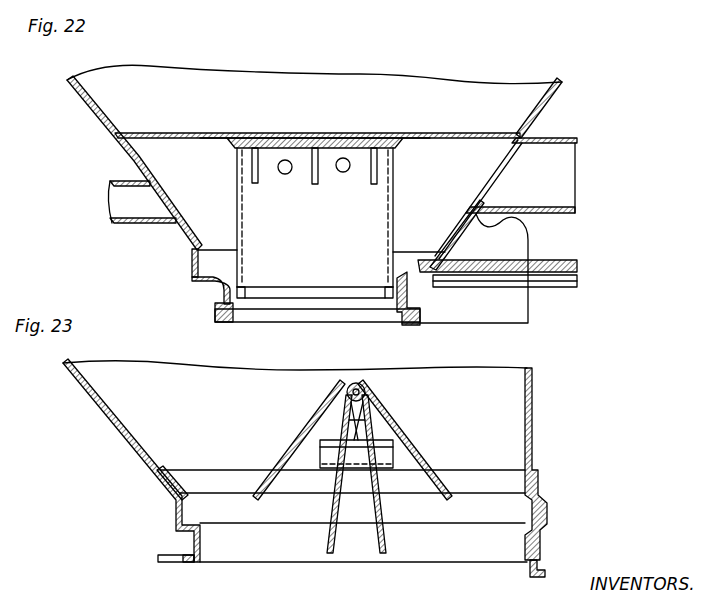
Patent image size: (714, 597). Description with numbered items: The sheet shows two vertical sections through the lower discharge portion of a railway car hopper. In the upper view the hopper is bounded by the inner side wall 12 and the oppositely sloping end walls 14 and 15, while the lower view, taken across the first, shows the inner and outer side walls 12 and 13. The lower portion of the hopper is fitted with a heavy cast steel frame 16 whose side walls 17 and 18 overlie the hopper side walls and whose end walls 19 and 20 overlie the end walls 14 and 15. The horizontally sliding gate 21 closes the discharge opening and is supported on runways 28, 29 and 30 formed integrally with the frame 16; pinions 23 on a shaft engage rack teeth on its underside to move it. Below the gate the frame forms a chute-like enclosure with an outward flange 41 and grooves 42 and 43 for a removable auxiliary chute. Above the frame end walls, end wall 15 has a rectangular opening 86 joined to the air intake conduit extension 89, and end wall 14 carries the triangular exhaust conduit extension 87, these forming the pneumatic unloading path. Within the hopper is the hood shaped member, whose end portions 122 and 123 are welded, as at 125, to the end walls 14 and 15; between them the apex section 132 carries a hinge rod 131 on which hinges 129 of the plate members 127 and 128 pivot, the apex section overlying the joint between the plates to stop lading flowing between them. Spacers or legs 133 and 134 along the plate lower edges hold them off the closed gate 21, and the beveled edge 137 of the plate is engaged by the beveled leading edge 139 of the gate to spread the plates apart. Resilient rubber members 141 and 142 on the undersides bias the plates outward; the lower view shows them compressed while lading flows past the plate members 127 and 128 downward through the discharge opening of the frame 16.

In FIG. 22, the inner side wall 12 is at (454, 88).
In FIG. 23, the inner side wall 12 is at (533, 421).
In FIG. 23, the outer side wall 13 is at (118, 428).
In FIG. 22, the end wall 14 is at (561, 98).
In FIG. 22, the end wall 15 is at (86, 113).
In FIG. 23, the end wall 15 is at (507, 382).
In FIG. 22, the frame 16 is at (157, 271).
In FIG. 23, the frame 16 is at (133, 515).
In FIG. 23, the side wall of frame 17 is at (540, 483).
In FIG. 23, the side wall of frame 18 is at (152, 478).
In FIG. 22, the end wall of frame 19 is at (455, 223).
In FIG. 22, the end wall of frame 20 is at (193, 240).
In FIG. 23, the end wall of frame 20 is at (488, 480).
In FIG. 22, the horizontally sliding gate 21 is at (560, 260).
In FIG. 22, the pinions 23 is at (322, 45).
In FIG. 22, the support or runway 28 is at (207, 280).
In FIG. 23, the support or runway 29 is at (180, 532).
In FIG. 23, the support or runway 30 is at (547, 513).
In FIG. 23, the horizontal flange 41 is at (163, 563).
In FIG. 22, the groove 42 is at (417, 327).
In FIG. 22, the groove 43 is at (237, 320).
In FIG. 23, the groove 43 is at (530, 567).
In FIG. 22, the rectangular opening 86 is at (158, 217).
In FIG. 23, the rectangular opening 86 is at (387, 452).
In FIG. 22, the conduit extension 87 is at (590, 143).
In FIG. 22, the conduit extension 89 is at (93, 192).
In FIG. 22, the end portion 122 is at (472, 152).
In FIG. 22, the end portion 123 is at (158, 150).
In FIG. 23, the end portion 123 is at (310, 431).
In FIG. 23, the weld 125 is at (290, 446).
In FIG. 22, the plate member 127 is at (332, 253).
In FIG. 23, the plate member 127 is at (383, 512).
In FIG. 23, the plate member 128 is at (330, 512).
In FIG. 22, the hinge 129 is at (313, 174).
In FIG. 22, the hinge rod 131 is at (368, 133).
In FIG. 23, the hinge rod 131 is at (357, 383).
In FIG. 22, the apex section 132 is at (427, 136).
In FIG. 23, the apex section 132 is at (365, 396).
In FIG. 22, the spacer or leg 133 is at (383, 297).
In FIG. 23, the spacer or leg 133 is at (388, 543).
In FIG. 23, the spacer or leg 134 is at (327, 543).
In FIG. 22, the beveled edge 137 is at (398, 180).
In FIG. 22, the beveled leading edge 139 is at (420, 258).
In FIG. 22, the resilient member 141 is at (332, 143).
In FIG. 23, the resilient member 141 is at (368, 423).
In FIG. 23, the resilient member 142 is at (348, 416).